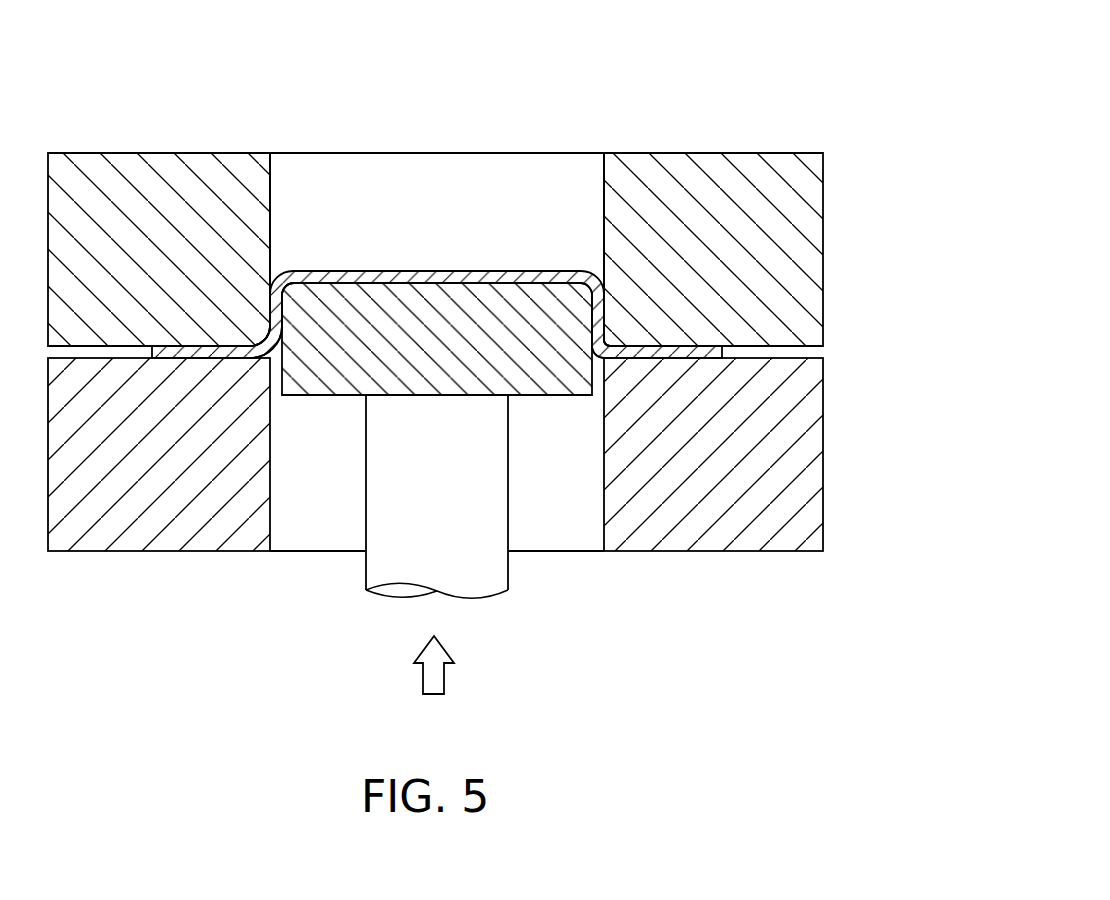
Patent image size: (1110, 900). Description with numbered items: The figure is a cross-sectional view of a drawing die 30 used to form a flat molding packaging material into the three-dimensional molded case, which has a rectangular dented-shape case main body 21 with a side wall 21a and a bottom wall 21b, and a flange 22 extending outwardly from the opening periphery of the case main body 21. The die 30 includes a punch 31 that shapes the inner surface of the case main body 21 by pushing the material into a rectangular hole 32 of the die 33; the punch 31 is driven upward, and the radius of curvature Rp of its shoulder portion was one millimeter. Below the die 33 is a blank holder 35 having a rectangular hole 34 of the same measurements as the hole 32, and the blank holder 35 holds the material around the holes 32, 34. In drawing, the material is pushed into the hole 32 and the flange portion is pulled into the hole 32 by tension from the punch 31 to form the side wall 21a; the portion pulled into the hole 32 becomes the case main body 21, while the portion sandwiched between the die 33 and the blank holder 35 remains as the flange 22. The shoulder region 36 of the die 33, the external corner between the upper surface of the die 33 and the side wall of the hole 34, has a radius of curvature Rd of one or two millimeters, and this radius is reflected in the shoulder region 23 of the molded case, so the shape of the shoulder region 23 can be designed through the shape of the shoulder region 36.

The die 30 is at (739, 101).
The punch 31 is at (540, 372).
The rectangular hole 32 is at (413, 199).
The die 33 is at (790, 238).
The rectangular hole 34 is at (551, 523).
The blank holder 35 is at (785, 467).
The shoulder region 36 is at (622, 333).
The case main body 21 is at (463, 270).
The side wall 21a is at (272, 287).
The bottom wall 21b is at (362, 270).
The flange 22 is at (183, 352).
The shoulder region 23 is at (270, 348).
The radius of curvature of the die shoulder region Rd is at (257, 327).
The radius of curvature of the punch shoulder portion Rp is at (291, 299).